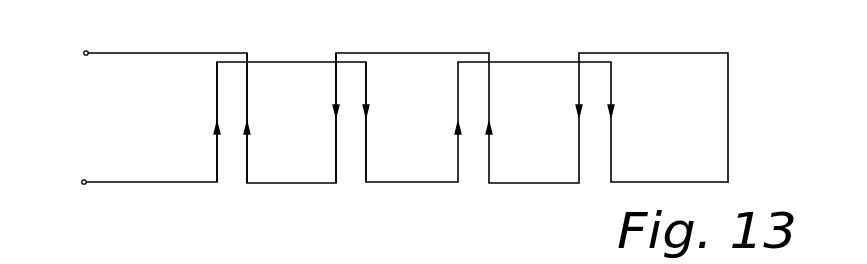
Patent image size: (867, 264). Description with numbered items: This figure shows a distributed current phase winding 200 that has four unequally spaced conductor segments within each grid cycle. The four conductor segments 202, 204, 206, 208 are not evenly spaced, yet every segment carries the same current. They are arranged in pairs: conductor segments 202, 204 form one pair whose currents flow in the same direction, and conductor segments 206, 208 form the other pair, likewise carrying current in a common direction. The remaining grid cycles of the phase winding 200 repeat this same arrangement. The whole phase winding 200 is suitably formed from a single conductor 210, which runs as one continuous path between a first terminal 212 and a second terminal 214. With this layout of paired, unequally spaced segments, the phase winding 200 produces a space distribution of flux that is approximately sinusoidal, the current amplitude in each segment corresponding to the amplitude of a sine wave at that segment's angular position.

The distributed current phase winding 200 is at (385, 92).
The conductor segment 202 is at (217, 87).
The conductor segment 204 is at (247, 113).
The conductor segment 206 is at (336, 153).
The conductor segment 208 is at (366, 155).
The single conductor 210 is at (143, 53).
The terminal 212 is at (86, 51).
The terminal 214 is at (83, 180).